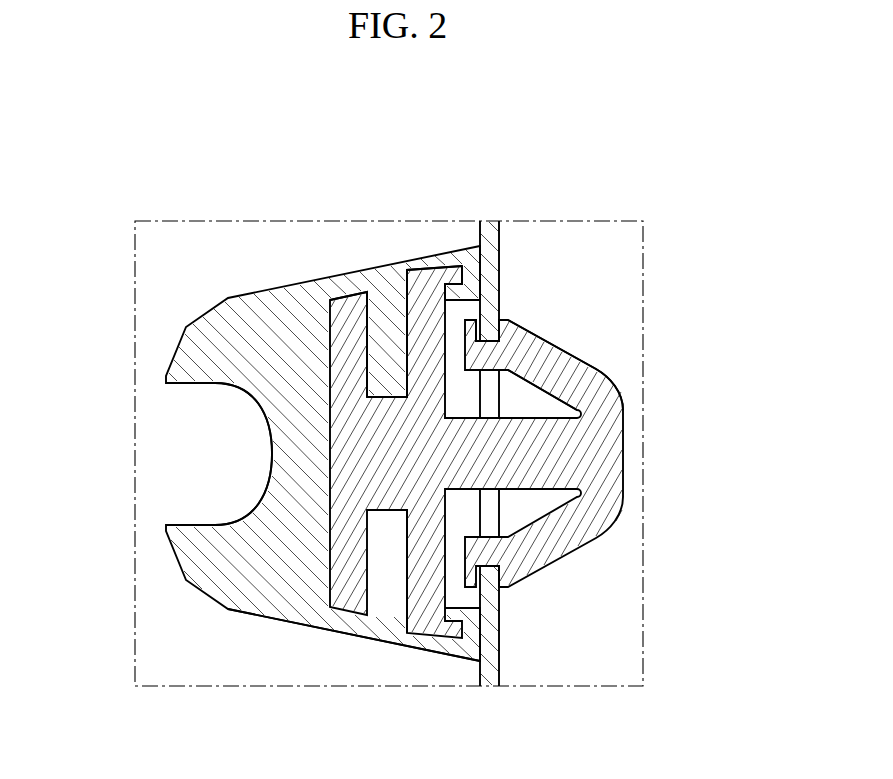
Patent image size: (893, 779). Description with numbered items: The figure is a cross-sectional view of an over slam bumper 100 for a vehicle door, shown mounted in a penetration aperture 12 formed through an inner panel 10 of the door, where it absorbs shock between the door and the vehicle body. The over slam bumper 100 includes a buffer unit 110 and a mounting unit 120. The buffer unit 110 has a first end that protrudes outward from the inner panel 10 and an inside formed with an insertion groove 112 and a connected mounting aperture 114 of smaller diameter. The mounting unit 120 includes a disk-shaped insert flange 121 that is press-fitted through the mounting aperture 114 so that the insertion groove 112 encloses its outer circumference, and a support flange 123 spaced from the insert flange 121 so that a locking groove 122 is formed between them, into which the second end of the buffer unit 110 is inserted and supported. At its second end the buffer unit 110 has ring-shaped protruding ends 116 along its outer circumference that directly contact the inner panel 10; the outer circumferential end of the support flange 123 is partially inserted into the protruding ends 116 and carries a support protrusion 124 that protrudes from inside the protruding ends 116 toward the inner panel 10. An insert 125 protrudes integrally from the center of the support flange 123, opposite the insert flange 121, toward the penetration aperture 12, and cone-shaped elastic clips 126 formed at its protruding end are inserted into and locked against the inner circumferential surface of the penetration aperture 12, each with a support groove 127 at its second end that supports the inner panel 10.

The over slam bumper 100 is at (250, 246).
The inner panel 10 is at (500, 250).
The penetration aperture 12 is at (495, 503).
The buffer unit 110 is at (250, 597).
The insertion groove 112 is at (352, 606).
The mounting aperture 114 is at (381, 402).
The protruding ends 116 is at (472, 633).
The mounting unit 120 is at (582, 556).
The insert flange 121 is at (336, 302).
The locking groove 122 is at (386, 516).
The support flange 123 is at (420, 302).
The support protrusion 124 is at (461, 266).
The insert 125 is at (520, 456).
The clip 126 is at (558, 350).
The support groove 127 is at (489, 328).